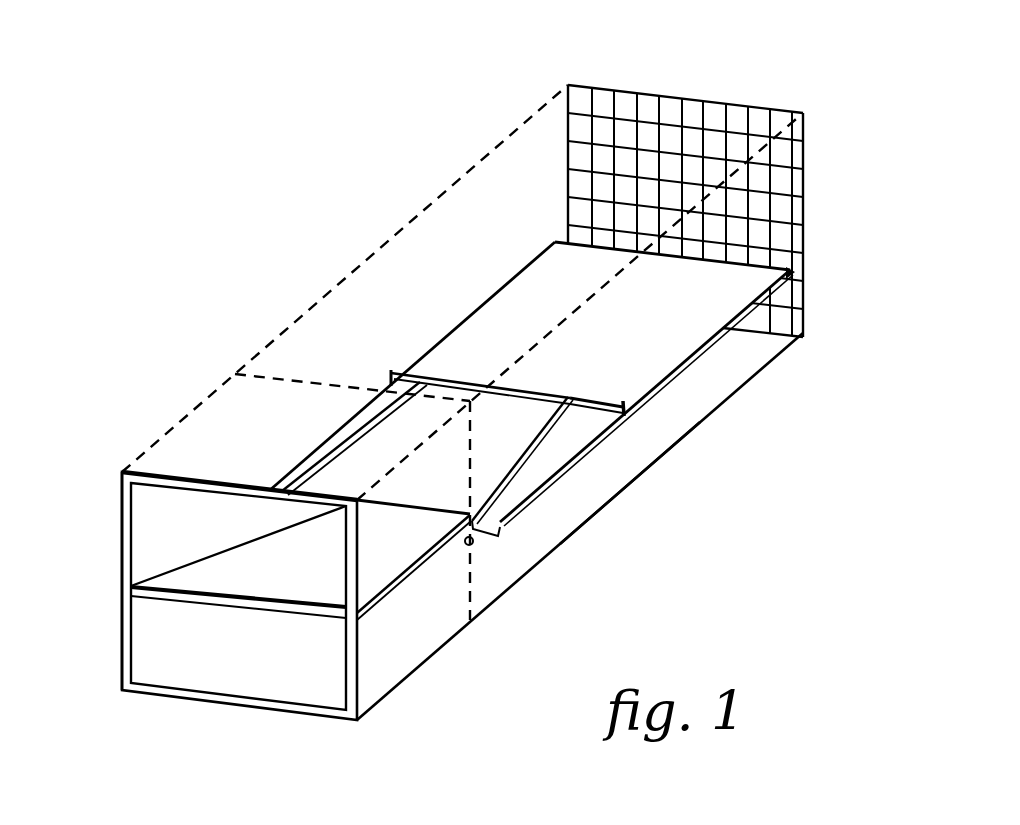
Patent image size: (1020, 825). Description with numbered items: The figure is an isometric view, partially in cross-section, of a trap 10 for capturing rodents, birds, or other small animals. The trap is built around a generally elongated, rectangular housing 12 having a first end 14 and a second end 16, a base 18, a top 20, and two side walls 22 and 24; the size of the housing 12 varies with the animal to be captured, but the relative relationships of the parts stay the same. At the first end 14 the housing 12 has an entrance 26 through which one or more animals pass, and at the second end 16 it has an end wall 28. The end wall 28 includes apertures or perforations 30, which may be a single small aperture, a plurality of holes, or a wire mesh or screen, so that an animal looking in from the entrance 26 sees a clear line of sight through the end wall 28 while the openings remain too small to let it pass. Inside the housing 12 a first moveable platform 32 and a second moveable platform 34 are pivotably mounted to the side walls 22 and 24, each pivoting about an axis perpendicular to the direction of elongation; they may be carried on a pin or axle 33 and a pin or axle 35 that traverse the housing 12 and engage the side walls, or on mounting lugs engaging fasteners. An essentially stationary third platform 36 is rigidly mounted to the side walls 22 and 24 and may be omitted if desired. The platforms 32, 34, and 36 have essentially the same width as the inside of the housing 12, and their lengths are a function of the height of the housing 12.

The trap 10 is at (308, 138).
The housing 12 is at (300, 310).
The first end 14 is at (105, 628).
The second end 16 is at (721, 171).
The base 18 is at (457, 637).
The top 20 is at (439, 282).
The side wall 22 is at (120, 522).
The side wall 24 is at (637, 447).
The entrance 26 is at (278, 577).
The end wall 28 is at (731, 103).
The apertures or perforations 30 is at (626, 100).
The first moveable platform 32 is at (496, 463).
The pin or axle 33 is at (472, 546).
The second moveable platform 34 is at (667, 357).
The pin or axle 35 is at (594, 399).
The stationary platform 36 is at (387, 593).